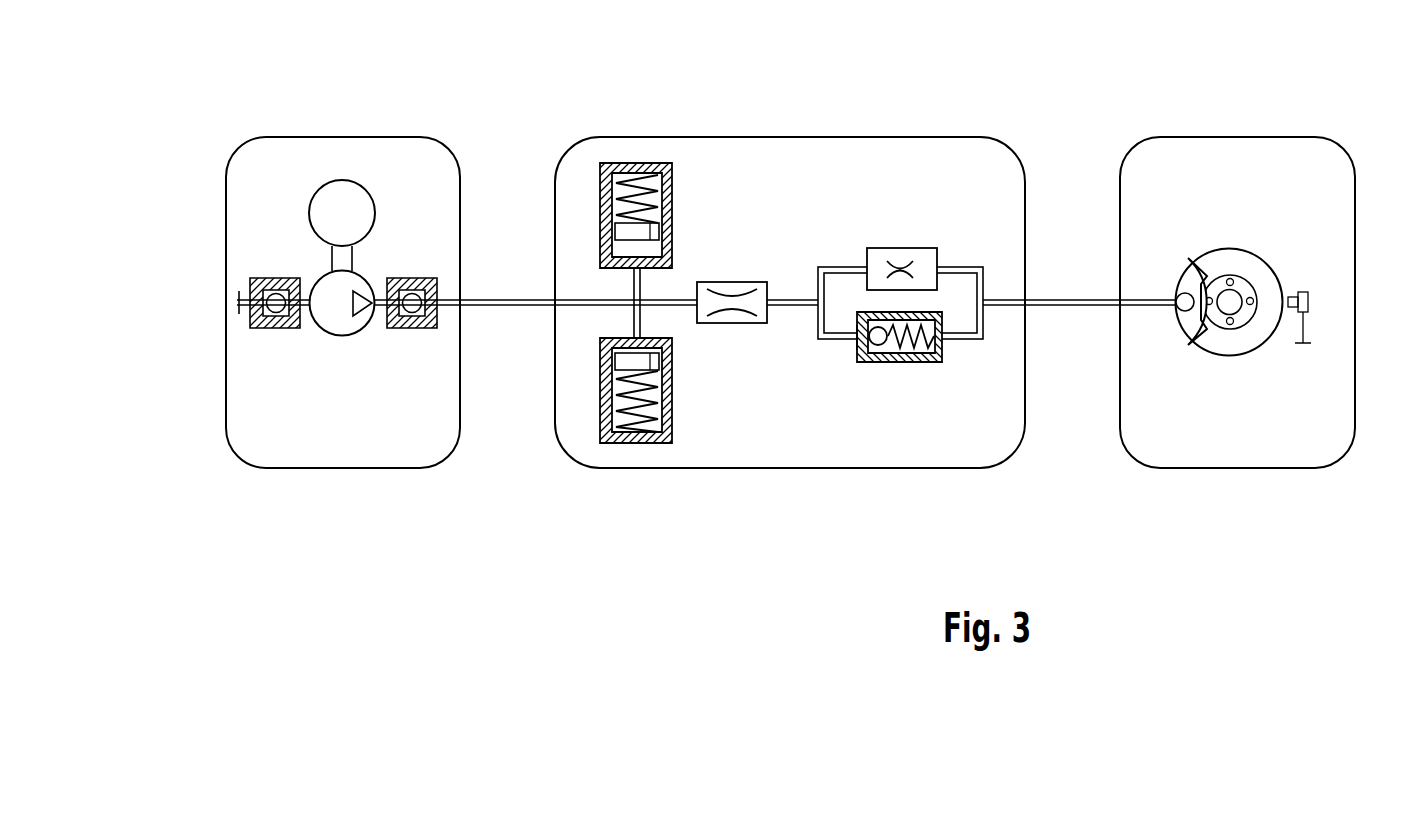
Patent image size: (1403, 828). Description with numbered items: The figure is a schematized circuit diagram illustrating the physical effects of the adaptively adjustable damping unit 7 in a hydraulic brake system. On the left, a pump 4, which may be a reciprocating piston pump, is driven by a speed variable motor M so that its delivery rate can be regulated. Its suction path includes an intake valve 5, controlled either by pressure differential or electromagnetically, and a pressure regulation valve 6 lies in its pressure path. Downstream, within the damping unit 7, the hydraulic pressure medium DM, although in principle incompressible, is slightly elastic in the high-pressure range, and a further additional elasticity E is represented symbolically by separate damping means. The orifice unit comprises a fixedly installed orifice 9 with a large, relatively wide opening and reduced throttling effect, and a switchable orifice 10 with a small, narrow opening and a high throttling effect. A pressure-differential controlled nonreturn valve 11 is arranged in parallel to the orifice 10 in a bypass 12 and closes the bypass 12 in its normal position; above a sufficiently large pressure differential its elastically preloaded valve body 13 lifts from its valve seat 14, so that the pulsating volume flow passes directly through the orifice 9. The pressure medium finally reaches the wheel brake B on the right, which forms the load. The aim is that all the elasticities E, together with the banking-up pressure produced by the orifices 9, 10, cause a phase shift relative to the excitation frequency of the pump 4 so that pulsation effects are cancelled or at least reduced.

The pump 4 is at (345, 328).
The intake valve 5 is at (276, 328).
The pressure regulation valve 6 is at (411, 328).
The damping unit 7 is at (790, 468).
The fixedly installed orifice 9 is at (732, 323).
The switchable orifice 10 is at (900, 248).
The nonreturn valve 11 is at (915, 362).
The bypass 12 is at (957, 339).
The valve body 13 is at (878, 345).
The valve seat 14 is at (856, 347).
The elasticity E is at (650, 163).
The pressure medium DM is at (650, 443).
The wheel brake B is at (1238, 468).
The motor M is at (342, 213).